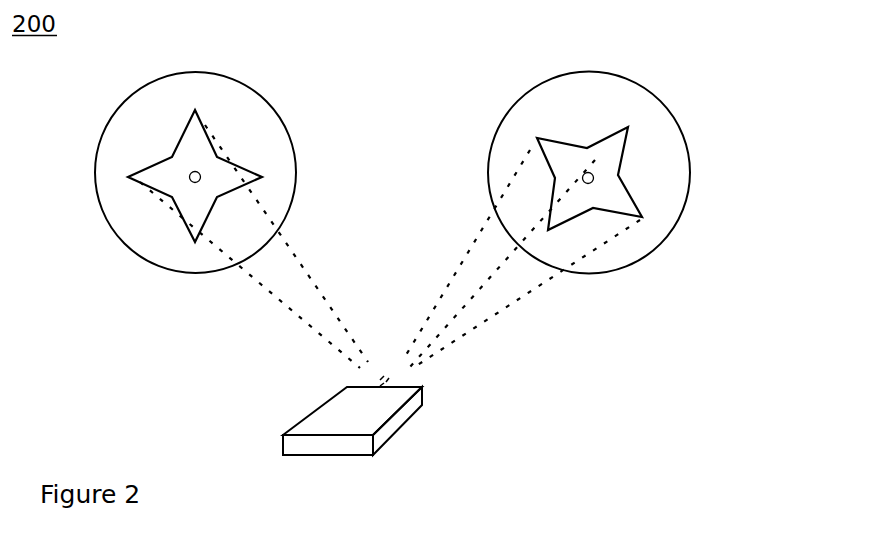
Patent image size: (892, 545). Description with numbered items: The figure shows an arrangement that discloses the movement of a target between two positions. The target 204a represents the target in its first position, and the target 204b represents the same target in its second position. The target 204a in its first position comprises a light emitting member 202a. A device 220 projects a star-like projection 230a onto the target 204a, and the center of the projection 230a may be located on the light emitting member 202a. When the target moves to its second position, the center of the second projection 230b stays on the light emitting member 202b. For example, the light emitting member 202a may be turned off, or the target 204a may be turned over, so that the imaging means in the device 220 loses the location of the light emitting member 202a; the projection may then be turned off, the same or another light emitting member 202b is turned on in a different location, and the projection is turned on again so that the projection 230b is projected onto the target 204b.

The light emitting member 202a is at (142, 176).
The light emitting member 202b is at (664, 178).
The target 204a is at (260, 169).
The target 204b is at (646, 168).
The device 220 is at (322, 415).
The figure 230a is at (200, 246).
The figure 230b is at (590, 259).